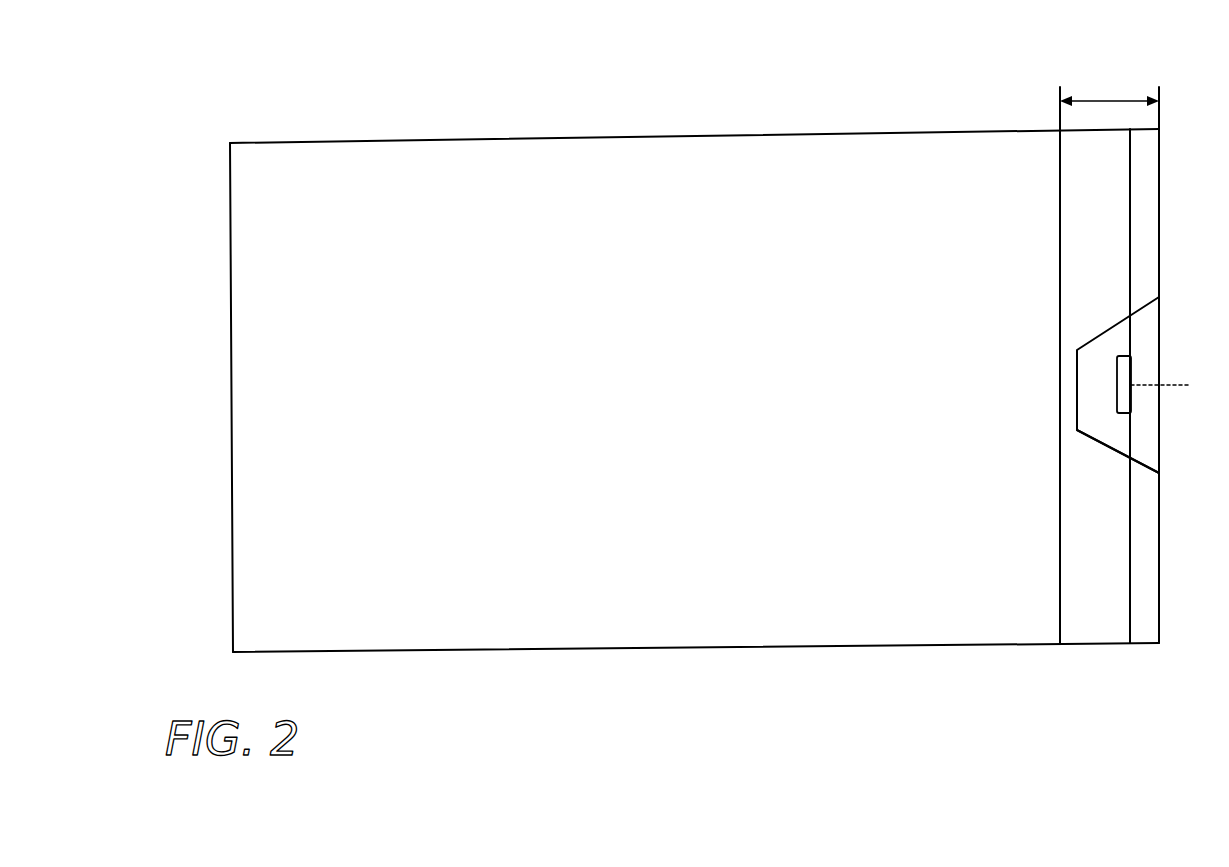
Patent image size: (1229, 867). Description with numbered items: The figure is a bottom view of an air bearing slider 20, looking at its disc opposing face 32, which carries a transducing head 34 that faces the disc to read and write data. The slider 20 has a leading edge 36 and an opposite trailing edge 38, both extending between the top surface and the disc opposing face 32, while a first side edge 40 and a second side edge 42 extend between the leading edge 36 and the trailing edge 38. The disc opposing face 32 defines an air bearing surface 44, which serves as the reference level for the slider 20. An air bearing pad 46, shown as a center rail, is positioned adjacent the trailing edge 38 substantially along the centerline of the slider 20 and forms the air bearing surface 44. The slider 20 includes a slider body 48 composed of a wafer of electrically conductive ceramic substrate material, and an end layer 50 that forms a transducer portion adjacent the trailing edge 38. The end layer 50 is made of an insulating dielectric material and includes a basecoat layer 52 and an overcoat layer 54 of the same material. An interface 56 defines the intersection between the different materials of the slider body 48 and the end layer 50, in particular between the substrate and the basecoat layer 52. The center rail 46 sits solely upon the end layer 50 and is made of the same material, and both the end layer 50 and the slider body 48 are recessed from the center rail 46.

The air bearing slider 20 is at (322, 89).
The disc opposing face 32 is at (503, 176).
The transducing head 34 is at (1130, 363).
The leading edge 36 is at (230, 415).
The trailing edge 38 is at (1161, 543).
The first side edge 40 is at (753, 135).
The second side edge 42 is at (678, 651).
The air bearing surface 44 is at (1122, 440).
The air bearing pad 46 is at (1093, 356).
The slider body 48 is at (637, 212).
The end layer 50 is at (1109, 88).
The basecoat layer 52 is at (1098, 235).
The overcoat layer 54 is at (1145, 560).
The interface 56 is at (1060, 643).